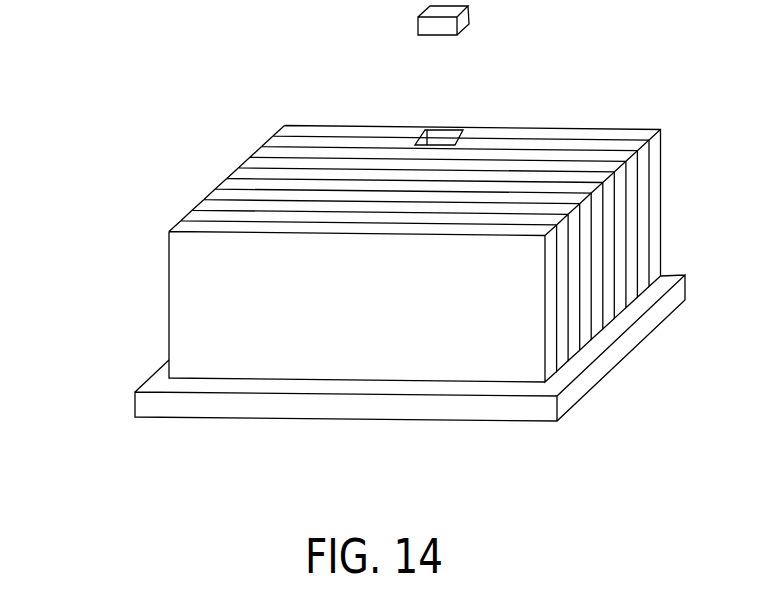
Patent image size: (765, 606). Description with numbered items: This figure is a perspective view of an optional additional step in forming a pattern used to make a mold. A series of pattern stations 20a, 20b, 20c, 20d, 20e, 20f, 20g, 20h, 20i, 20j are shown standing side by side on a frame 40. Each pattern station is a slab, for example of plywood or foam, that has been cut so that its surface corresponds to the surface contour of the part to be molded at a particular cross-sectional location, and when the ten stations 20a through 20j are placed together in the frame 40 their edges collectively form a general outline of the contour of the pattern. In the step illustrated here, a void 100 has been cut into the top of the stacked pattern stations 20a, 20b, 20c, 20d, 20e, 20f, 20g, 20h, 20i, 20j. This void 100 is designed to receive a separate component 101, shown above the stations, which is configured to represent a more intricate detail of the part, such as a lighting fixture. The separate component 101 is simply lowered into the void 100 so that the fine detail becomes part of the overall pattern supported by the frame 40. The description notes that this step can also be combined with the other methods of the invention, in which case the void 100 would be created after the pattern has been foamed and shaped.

The pattern station 20a is at (187, 294).
The pattern station 20b is at (190, 211).
The pattern station 20c is at (210, 193).
The pattern station 20d is at (225, 180).
The pattern station 20e is at (230, 176).
The pattern station 20f is at (238, 168).
The pattern station 20g is at (248, 159).
The pattern station 20h is at (258, 148).
The pattern station 20i is at (265, 141).
The pattern station 20j is at (274, 135).
The frame 40 is at (424, 404).
The void 100 is at (445, 134).
The separate component 101 is at (469, 22).